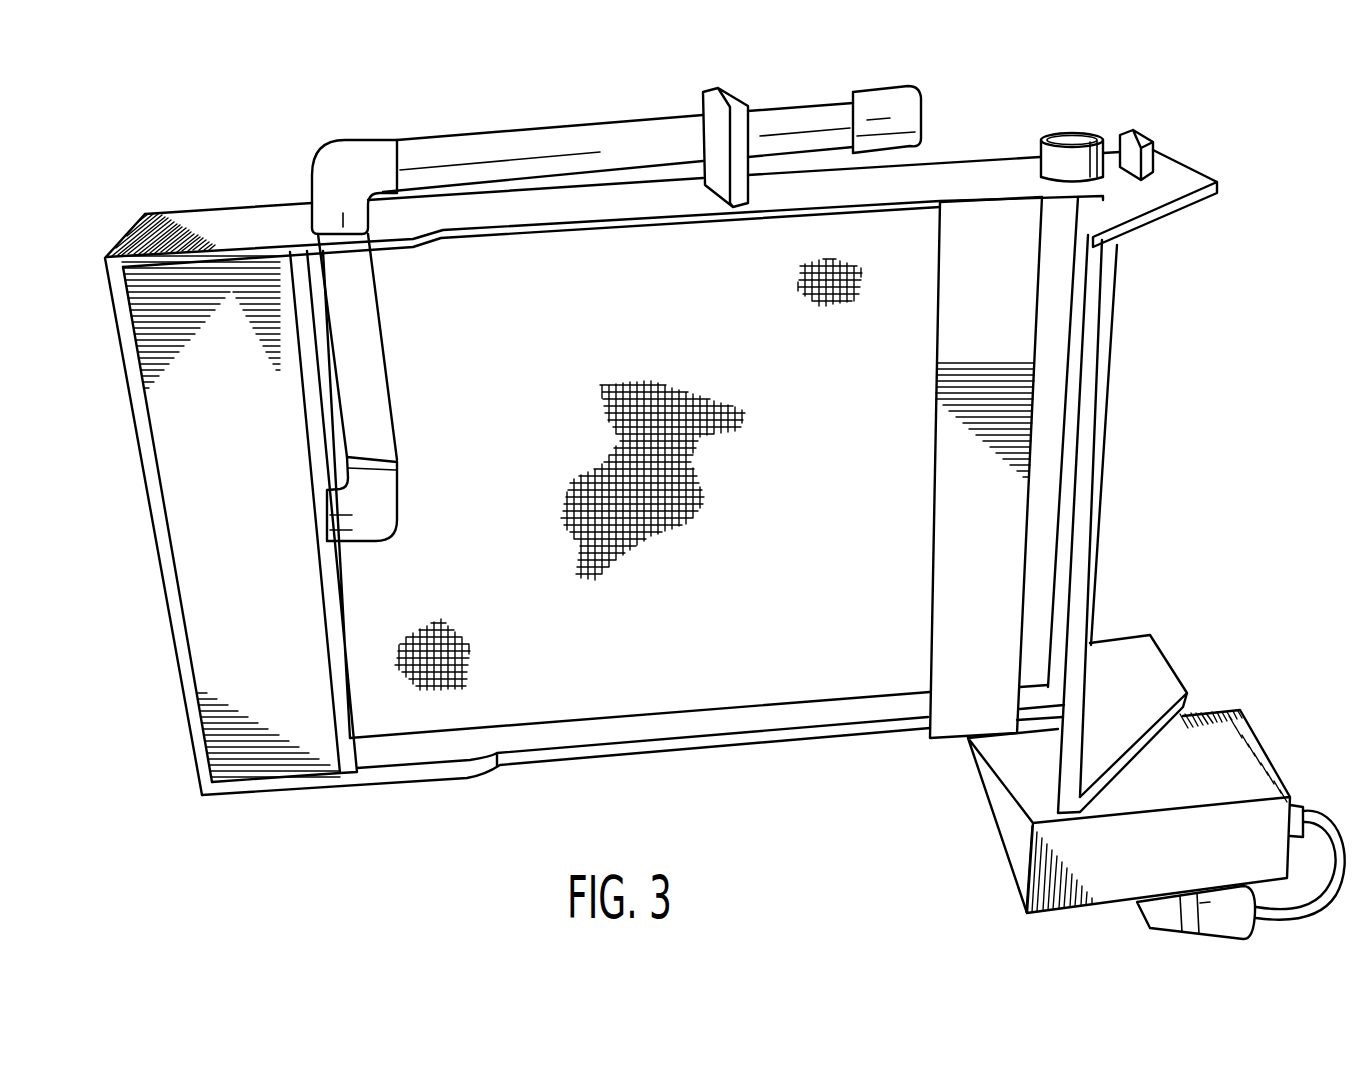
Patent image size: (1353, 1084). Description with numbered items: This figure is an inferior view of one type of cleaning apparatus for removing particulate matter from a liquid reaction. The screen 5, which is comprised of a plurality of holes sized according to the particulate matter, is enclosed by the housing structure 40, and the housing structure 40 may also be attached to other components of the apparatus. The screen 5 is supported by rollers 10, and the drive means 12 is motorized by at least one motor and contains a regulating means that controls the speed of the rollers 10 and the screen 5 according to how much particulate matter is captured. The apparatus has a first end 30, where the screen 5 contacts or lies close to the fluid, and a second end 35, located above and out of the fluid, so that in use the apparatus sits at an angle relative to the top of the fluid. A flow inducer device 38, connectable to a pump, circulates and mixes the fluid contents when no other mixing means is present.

The screen 5 is at (740, 491).
The rollers 10 is at (1075, 140).
The drive means 12 is at (1172, 868).
The first end 30 is at (121, 528).
The second end 35 is at (1130, 462).
The flow inducer device 38 is at (542, 130).
The housing structure 40 is at (590, 222).